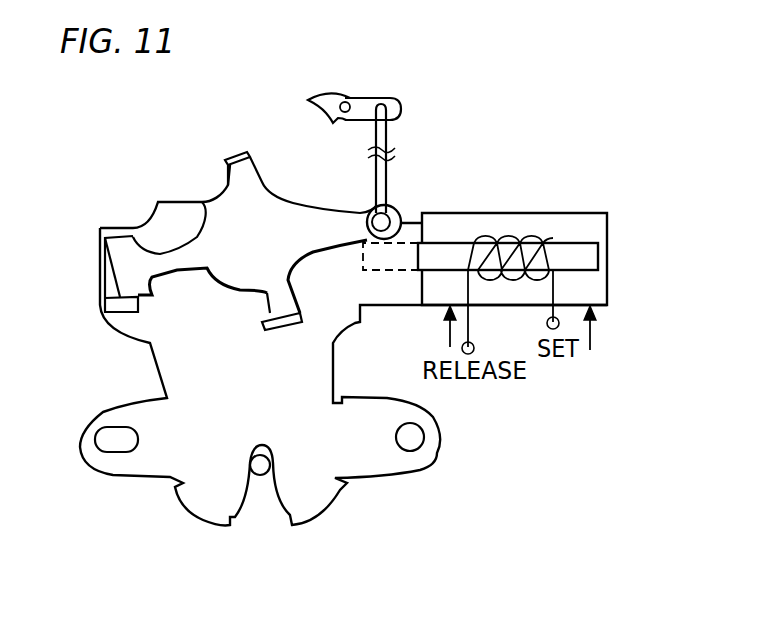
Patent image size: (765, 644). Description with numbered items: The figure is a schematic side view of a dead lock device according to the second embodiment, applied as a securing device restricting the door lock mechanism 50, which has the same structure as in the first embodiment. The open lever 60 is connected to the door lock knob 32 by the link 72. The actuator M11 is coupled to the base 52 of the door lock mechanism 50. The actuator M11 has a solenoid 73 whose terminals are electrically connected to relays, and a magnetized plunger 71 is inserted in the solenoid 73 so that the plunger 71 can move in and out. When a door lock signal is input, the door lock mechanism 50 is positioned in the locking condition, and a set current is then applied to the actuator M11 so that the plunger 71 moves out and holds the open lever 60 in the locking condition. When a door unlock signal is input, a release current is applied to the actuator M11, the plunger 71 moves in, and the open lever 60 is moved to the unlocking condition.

The door lock knob 32 is at (333, 93).
The door lock mechanism 50 is at (309, 537).
The base 52 is at (387, 478).
The open lever 60 is at (243, 230).
The plunger 71 is at (437, 273).
The link 72 is at (390, 183).
The solenoid 73 is at (503, 235).
The actuator M11 is at (610, 243).